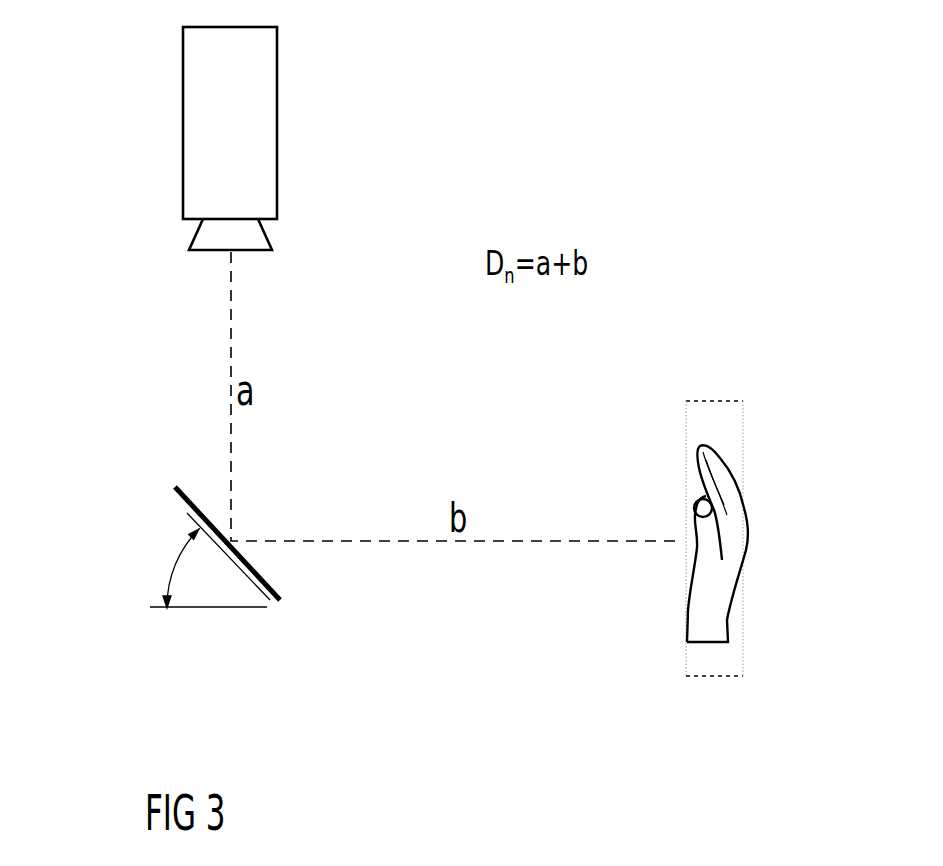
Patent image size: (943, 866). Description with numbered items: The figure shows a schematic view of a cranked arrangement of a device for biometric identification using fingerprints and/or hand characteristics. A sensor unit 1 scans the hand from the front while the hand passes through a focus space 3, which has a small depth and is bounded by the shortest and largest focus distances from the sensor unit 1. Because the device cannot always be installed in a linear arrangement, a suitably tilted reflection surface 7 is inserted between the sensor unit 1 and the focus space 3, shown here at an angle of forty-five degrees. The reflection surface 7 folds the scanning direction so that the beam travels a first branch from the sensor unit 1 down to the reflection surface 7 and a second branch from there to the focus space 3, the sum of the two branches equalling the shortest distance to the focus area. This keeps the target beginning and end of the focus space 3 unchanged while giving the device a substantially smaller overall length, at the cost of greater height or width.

The sensor unit 1 is at (207, 103).
The reflection surface 7 is at (173, 488).
The focus space 3 is at (743, 676).